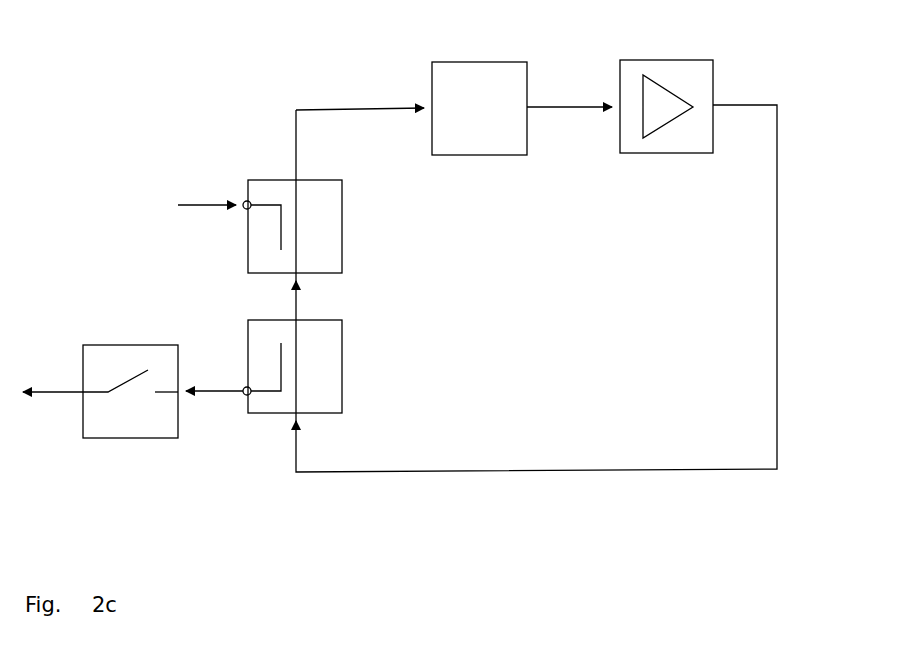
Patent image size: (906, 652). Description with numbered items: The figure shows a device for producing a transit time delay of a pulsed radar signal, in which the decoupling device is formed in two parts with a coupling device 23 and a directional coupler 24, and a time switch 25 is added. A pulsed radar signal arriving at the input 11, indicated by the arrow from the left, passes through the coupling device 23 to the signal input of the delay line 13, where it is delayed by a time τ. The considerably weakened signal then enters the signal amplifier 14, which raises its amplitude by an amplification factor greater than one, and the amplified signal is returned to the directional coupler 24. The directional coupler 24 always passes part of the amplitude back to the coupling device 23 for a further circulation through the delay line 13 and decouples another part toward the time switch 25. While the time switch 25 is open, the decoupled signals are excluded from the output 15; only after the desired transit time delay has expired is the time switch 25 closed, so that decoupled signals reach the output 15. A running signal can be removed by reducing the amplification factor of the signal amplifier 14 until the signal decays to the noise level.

The input 11 is at (238, 190).
The delay line 13 is at (450, 90).
The signal amplifier 14 is at (690, 88).
The output 15 is at (75, 403).
The coupling device 23 is at (321, 208).
The directional coupler 24 is at (331, 375).
The time switch 25 is at (133, 430).